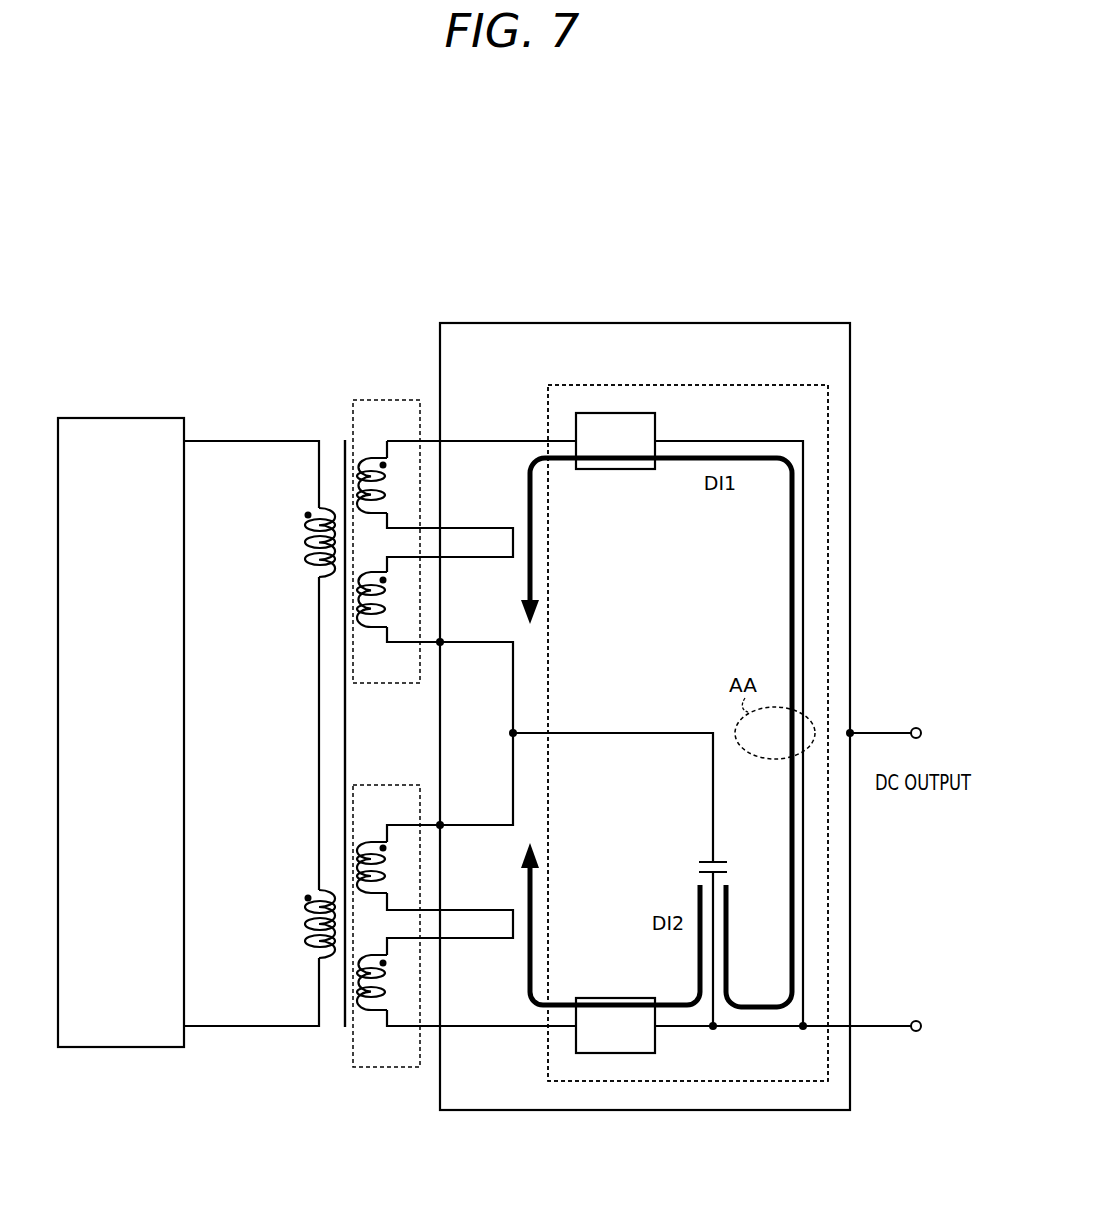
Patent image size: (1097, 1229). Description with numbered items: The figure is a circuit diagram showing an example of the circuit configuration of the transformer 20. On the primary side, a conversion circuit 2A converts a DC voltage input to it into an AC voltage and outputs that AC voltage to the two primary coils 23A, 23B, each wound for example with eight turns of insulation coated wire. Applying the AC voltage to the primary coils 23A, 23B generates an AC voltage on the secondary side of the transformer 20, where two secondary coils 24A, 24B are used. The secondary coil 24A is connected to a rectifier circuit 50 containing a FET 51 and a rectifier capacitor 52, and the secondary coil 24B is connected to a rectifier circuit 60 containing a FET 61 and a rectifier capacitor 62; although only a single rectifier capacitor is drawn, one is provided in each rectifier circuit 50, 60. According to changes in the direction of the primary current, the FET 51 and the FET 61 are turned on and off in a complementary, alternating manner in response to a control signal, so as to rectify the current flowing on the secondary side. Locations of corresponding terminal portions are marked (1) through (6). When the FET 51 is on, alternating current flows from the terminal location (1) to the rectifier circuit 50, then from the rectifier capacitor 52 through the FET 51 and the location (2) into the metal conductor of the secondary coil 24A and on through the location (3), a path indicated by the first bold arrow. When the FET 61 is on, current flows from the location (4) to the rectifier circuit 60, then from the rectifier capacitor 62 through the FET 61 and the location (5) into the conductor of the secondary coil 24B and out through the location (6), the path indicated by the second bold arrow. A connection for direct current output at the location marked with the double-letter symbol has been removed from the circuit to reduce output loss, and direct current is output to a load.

The transformer 20 is at (390, 213).
The conversion circuit 2A is at (121, 418).
The primary coil 23A is at (303, 547).
The primary coil 23B is at (303, 928).
The secondary coil 24A is at (387, 400).
The secondary coil 24B is at (388, 1068).
The rectifier circuit 50 is at (688, 711).
The rectifier circuit 60 is at (701, 385).
The FET 51 is at (615, 470).
The FET 61 is at (615, 998).
The rectifier capacitor 52 is at (666, 870).
The rectifier capacitor 62 is at (698, 868).
The terminal portion location 1 is at (404, 644).
The terminal portion location 2 is at (405, 441).
The terminal portion location 3 is at (440, 648).
The terminal portion location 4 is at (404, 823).
The terminal portion location 5 is at (405, 1027).
The terminal portion location 6 is at (440, 821).